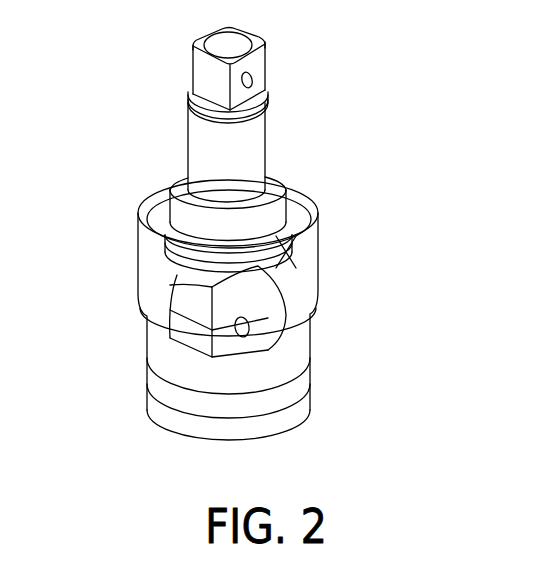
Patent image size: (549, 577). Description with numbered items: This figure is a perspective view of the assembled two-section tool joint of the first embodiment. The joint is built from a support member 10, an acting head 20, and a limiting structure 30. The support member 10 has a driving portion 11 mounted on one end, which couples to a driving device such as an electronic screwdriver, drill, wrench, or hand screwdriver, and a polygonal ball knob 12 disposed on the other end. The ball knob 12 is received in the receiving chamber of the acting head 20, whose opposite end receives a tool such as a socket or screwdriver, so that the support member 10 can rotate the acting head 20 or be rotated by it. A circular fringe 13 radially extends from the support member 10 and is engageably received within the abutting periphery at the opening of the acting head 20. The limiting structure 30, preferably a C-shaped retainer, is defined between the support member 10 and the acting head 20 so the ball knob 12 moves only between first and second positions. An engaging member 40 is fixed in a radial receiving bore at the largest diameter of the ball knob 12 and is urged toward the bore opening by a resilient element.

The support member 10 is at (262, 130).
The driving portion 11 is at (238, 35).
The polygonal ball knob 12 is at (185, 320).
The circular fringe 13 is at (281, 236).
The acting head 20 is at (293, 353).
The limiting structure 30 is at (281, 290).
The engaging member 40 is at (250, 320).